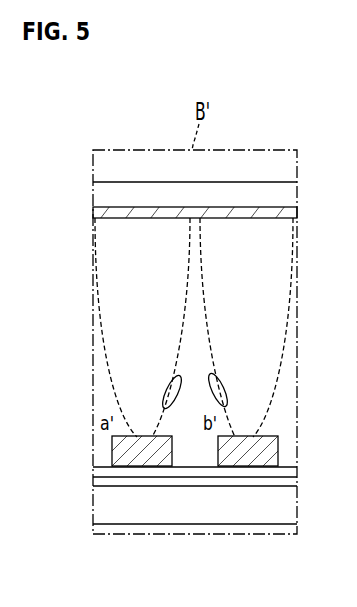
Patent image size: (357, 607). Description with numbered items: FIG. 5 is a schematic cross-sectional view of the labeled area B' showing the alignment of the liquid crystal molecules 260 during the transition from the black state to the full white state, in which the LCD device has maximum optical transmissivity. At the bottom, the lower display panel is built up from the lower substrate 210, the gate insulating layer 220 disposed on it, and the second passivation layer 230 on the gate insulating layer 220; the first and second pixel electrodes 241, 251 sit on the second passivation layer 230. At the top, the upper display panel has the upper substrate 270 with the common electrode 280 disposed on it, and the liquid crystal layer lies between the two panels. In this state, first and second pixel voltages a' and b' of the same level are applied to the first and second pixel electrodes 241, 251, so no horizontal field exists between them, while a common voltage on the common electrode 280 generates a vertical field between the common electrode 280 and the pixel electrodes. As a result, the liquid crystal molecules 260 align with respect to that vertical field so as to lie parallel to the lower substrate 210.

The lower substrate 210 is at (110, 511).
The gate insulating layer 220 is at (110, 482).
The second passivation layer 230 is at (110, 470).
The first pixel electrode 241 is at (141, 452).
The second pixel electrode 251 is at (249, 452).
The liquid crystal molecules 260 is at (226, 376).
The upper substrate 270 is at (110, 194).
The common electrode 280 is at (110, 213).